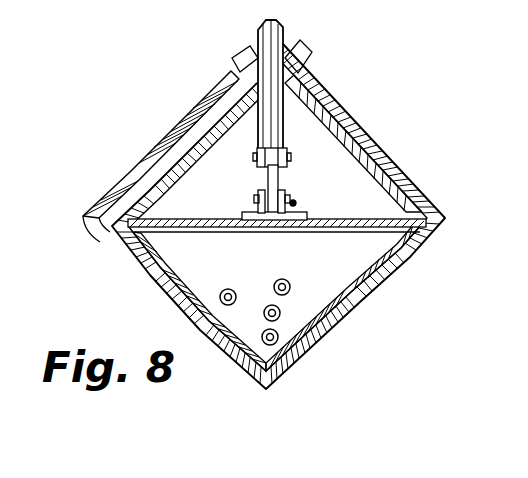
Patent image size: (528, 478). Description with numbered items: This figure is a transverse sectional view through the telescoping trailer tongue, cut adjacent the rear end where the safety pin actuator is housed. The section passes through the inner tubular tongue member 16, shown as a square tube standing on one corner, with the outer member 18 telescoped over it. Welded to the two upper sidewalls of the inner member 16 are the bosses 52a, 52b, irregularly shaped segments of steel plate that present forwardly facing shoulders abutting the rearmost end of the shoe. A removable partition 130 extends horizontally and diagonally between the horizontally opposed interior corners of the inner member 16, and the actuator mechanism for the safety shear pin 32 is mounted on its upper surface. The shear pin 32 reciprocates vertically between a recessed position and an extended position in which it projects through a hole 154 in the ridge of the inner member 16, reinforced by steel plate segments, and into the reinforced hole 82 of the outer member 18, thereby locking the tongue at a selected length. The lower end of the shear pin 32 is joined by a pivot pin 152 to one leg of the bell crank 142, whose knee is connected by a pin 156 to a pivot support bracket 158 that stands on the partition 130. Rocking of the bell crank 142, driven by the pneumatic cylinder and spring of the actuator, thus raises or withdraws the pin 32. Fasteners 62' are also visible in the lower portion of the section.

The inner tubular tongue member 16 is at (400, 196).
The outer member 18 is at (132, 257).
The safety shear pin 32 is at (284, 32).
The reinforced hole 82 is at (262, 40).
The boss 52a is at (354, 140).
The boss 52b is at (205, 106).
The hole 154 is at (284, 96).
The pivot pin 152 is at (257, 160).
The bell crank 142 is at (282, 170).
The pin 156 is at (293, 198).
The pivot support bracket 158 is at (242, 212).
The removable partition 130 is at (170, 218).
The fasteners 62' is at (281, 299).